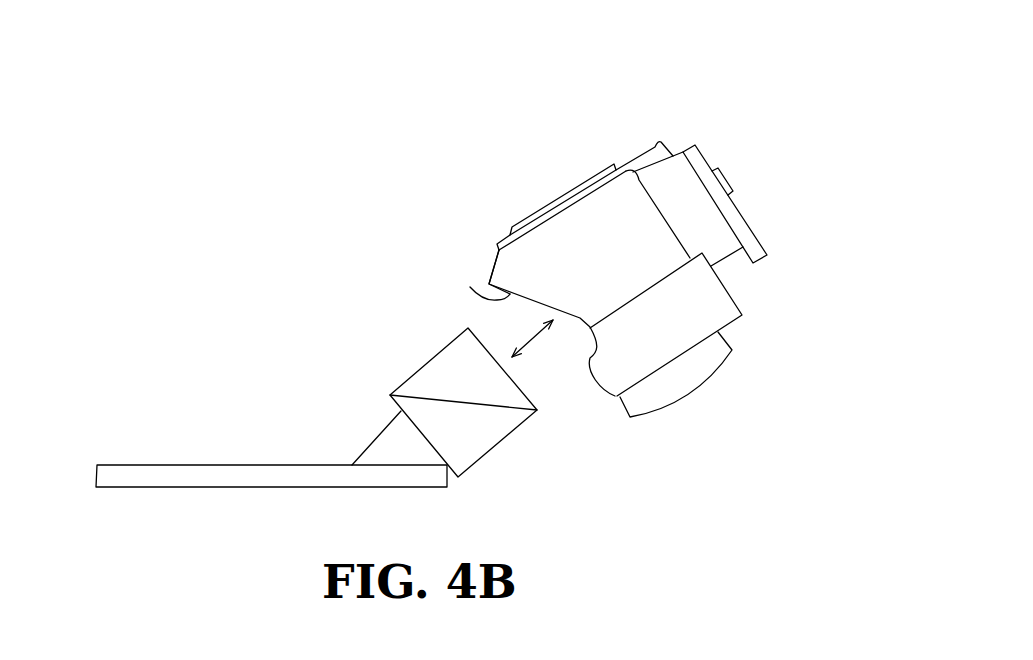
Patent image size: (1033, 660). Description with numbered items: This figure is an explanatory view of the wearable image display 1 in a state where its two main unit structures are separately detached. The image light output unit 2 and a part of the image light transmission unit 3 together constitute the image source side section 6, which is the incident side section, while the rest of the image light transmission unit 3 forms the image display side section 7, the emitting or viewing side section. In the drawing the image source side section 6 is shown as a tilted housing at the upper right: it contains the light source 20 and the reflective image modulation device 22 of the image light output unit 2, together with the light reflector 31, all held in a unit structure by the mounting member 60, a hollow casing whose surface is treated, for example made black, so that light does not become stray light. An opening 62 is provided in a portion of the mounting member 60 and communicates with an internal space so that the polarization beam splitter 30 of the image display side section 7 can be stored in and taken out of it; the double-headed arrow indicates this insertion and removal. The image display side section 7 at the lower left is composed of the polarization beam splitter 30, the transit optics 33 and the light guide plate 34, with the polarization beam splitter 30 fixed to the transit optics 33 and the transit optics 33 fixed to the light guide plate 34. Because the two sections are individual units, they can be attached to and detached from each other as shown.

The wearable image display 1 is at (343, 152).
The image light output unit 2 is at (594, 165).
The image light transmission unit 3 is at (292, 447).
The image source side section 6 is at (643, 133).
The image display side section 7 is at (135, 405).
The light source 20 is at (710, 164).
The reflective image modulation device 22 is at (545, 205).
The polarization beam splitter 30 is at (425, 364).
The light reflector 31 is at (690, 388).
The transit optics 33 is at (374, 440).
The light guide plate 34 is at (223, 465).
The mounting member 60 is at (505, 264).
The opening 62 is at (471, 288).